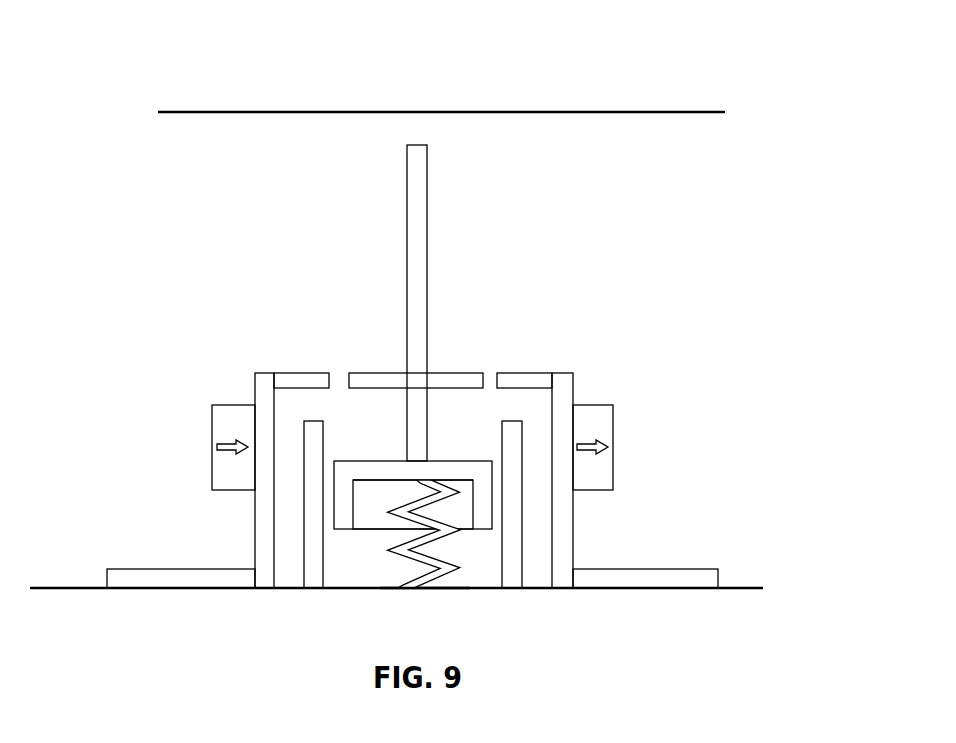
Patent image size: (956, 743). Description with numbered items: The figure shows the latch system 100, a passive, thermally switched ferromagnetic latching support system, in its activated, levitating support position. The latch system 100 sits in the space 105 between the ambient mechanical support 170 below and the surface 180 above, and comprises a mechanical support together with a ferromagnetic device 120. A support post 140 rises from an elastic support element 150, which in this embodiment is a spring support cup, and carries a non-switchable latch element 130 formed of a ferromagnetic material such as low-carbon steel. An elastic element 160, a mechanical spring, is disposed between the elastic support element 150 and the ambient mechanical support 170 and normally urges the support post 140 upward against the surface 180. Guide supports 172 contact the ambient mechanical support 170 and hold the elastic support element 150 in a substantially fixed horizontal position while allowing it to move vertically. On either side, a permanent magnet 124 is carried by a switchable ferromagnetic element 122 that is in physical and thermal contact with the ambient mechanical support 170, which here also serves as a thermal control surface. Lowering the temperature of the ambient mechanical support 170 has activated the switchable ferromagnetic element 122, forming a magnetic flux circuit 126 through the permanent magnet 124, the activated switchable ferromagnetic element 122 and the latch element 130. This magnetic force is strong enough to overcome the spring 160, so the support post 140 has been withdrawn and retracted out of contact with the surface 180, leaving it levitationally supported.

The latch system 100 is at (150, 70).
The space 105 is at (133, 391).
The ferromagnetic device 120 is at (762, 448).
The switchable ferromagnetic element 122 is at (573, 376).
The permanent magnet 124 is at (613, 447).
The magnetic flux circuit 126 is at (547, 352).
The latch element 130 is at (443, 371).
The support post 140 is at (428, 282).
The elastic support element 150 is at (438, 461).
The elastic element 160 is at (407, 552).
The ambient mechanical support 170 is at (670, 588).
The guide support 172 is at (522, 497).
The surface 180 is at (358, 110).